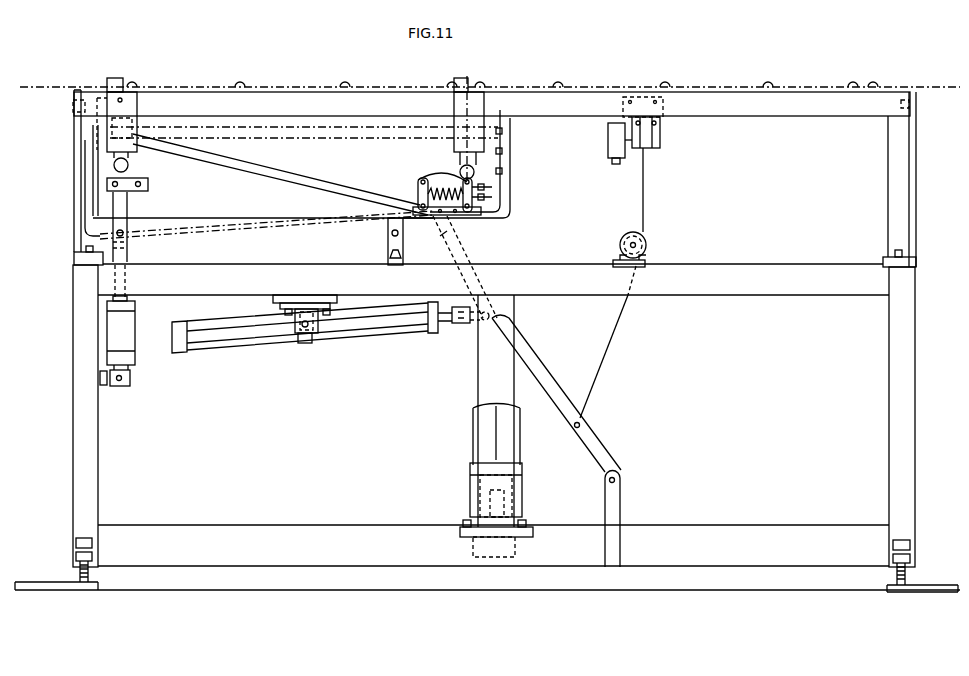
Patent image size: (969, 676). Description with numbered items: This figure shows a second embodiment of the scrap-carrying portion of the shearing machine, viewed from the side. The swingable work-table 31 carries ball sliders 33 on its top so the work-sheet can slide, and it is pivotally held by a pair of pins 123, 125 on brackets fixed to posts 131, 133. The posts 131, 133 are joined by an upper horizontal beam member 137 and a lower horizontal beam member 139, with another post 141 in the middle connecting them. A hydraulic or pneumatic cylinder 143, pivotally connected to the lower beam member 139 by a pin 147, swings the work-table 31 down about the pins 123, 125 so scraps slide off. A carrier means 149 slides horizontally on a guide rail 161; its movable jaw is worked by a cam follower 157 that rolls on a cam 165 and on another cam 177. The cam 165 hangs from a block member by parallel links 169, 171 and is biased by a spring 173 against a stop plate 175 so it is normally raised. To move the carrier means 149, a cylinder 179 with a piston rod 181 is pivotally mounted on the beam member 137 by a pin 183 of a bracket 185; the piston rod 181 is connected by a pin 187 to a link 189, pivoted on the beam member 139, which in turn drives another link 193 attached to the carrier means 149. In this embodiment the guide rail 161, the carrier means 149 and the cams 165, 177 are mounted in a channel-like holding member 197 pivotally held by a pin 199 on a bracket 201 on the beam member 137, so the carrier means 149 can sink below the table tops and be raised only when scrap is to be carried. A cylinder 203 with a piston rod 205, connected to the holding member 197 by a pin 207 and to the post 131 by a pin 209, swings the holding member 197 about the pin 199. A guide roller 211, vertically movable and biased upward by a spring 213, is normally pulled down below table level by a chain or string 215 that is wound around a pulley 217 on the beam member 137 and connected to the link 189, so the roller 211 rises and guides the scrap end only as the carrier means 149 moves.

The swingable work-table 31 is at (300, 92).
The ball sliders 33 is at (252, 77).
The pin 123 is at (74, 107).
The pin 125 is at (916, 113).
The post 131 is at (98, 466).
The post 133 is at (910, 370).
The upper horizontal beam member 137 is at (778, 296).
The lower horizontal beam member 139 is at (757, 526).
The post 141 is at (478, 381).
The hydraulic or pneumatic motor or cylinder 143 is at (473, 432).
The pin 147 is at (470, 493).
The carrier means 149 is at (130, 95).
The cam follower 157 is at (125, 176).
The guide rail 161 is at (291, 180).
The cam 165 is at (443, 177).
The parallel link 169 is at (418, 190).
The parallel link 171 is at (510, 204).
The spring 173 is at (455, 216).
The stop plate 175 is at (490, 188).
The cam 177 is at (141, 187).
The hydraulic or pneumatic motor or cylinder 179 is at (232, 348).
The piston rod 181 is at (450, 323).
The pin 183 is at (304, 330).
The bracket 185 is at (320, 328).
The pin 187 is at (499, 317).
The link 189 is at (590, 441).
The link 193 is at (280, 174).
The channel-like holding member 197 is at (232, 226).
The pin 199 is at (388, 236).
The bracket 201 is at (402, 253).
The hydraulic or pneumatic motor or cylinder 203 is at (126, 325).
The piston rod 205 is at (127, 283).
The pin 207 is at (127, 238).
The pin 209 is at (121, 386).
The guide roller 211 is at (645, 97).
The spring 213 is at (662, 120).
The chain or string 215 is at (645, 178).
The pulley 217 is at (627, 234).